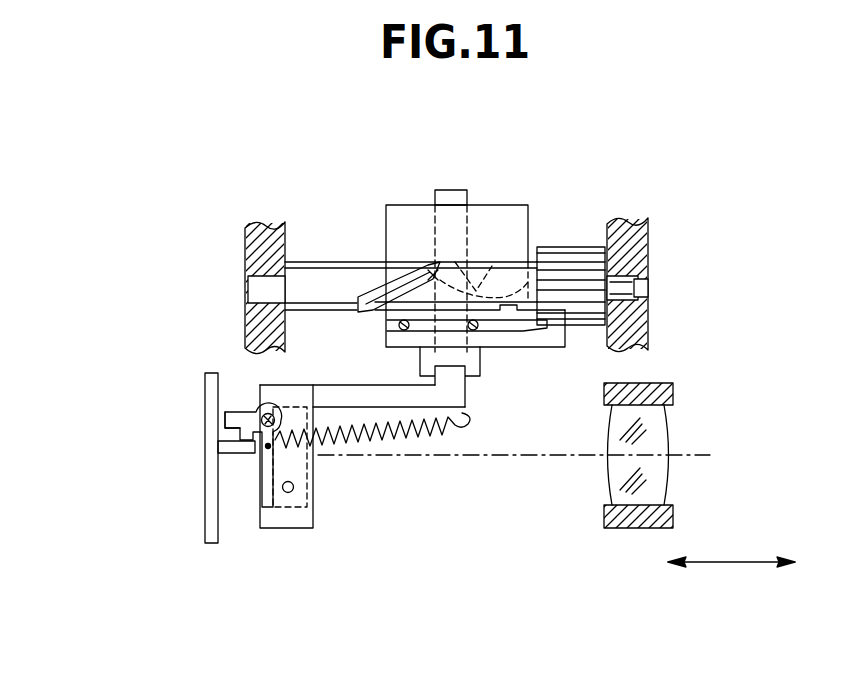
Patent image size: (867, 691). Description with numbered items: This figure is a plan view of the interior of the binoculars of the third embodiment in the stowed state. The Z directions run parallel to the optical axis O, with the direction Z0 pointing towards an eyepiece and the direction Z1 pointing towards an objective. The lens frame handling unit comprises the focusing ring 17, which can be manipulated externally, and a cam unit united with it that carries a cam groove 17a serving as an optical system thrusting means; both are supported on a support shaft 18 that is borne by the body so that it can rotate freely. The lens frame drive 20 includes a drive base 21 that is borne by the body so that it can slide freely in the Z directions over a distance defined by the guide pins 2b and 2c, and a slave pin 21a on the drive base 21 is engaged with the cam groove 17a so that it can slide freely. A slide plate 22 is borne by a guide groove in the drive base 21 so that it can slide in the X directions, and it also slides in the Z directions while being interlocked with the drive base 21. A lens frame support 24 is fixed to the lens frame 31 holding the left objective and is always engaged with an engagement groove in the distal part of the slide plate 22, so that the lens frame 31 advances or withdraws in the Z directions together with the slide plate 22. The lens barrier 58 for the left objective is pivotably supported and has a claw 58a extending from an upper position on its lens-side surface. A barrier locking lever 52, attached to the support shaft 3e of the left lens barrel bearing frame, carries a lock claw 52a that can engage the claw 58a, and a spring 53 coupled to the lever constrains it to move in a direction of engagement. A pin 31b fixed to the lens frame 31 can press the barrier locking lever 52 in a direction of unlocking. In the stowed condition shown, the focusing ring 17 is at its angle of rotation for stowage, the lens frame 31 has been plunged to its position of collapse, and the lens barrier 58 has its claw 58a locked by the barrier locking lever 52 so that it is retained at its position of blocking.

The lens frame drive 20 is at (466, 226).
The drive base 21 is at (510, 205).
The slave pin 21a is at (484, 282).
The focusing ring 17 is at (570, 262).
The cam groove 17a is at (410, 277).
The support shaft 18 is at (653, 279).
The guide pin 2b is at (400, 328).
The guide pin 2c is at (520, 328).
The slide plate 22 is at (480, 365).
The lens frame support 24 is at (358, 385).
The lens frame 31 is at (274, 530).
The pin 31b is at (289, 493).
The barrier locking lever 52 is at (262, 407).
The lock claw 52a is at (226, 418).
The support shaft 3e is at (262, 416).
The lens barrier 58 is at (203, 455).
The claw 58a is at (240, 452).
The spring 53 is at (415, 440).
The optical axis O is at (528, 458).
The direction Z1 is at (680, 566).
The direction Z0 is at (786, 566).